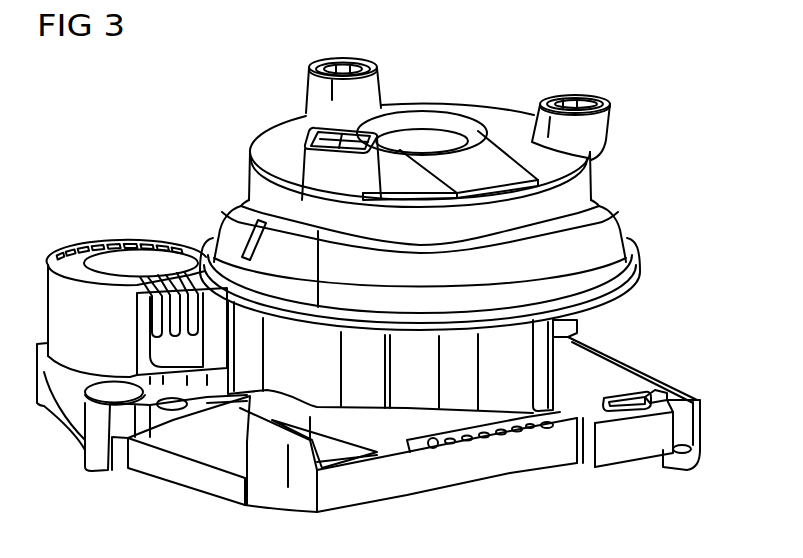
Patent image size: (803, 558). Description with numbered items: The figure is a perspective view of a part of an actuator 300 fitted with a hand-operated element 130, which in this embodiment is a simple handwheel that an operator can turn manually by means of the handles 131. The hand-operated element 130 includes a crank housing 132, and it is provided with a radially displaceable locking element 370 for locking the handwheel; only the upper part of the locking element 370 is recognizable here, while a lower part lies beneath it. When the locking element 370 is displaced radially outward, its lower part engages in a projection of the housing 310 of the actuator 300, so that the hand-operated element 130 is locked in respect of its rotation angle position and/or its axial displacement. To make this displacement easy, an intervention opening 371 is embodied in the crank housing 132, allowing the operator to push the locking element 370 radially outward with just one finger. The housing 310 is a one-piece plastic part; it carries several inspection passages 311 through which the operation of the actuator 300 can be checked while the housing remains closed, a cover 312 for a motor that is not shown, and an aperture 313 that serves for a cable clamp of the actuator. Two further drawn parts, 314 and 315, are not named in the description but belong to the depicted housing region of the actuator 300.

The actuator 300 is at (670, 120).
The housing 310 is at (632, 378).
The inspection passages 311 is at (531, 425).
The cover 312 is at (108, 248).
The aperture 313 is at (320, 437).
The side wall strip 314 is at (533, 348).
The housing cover 315 is at (607, 227).
The hand-operated element 130 is at (467, 92).
The handles 131 is at (338, 135).
The crank housing 132 is at (400, 108).
The radially displaceable locking element 370 is at (490, 160).
The intervention opening 371 is at (420, 135).